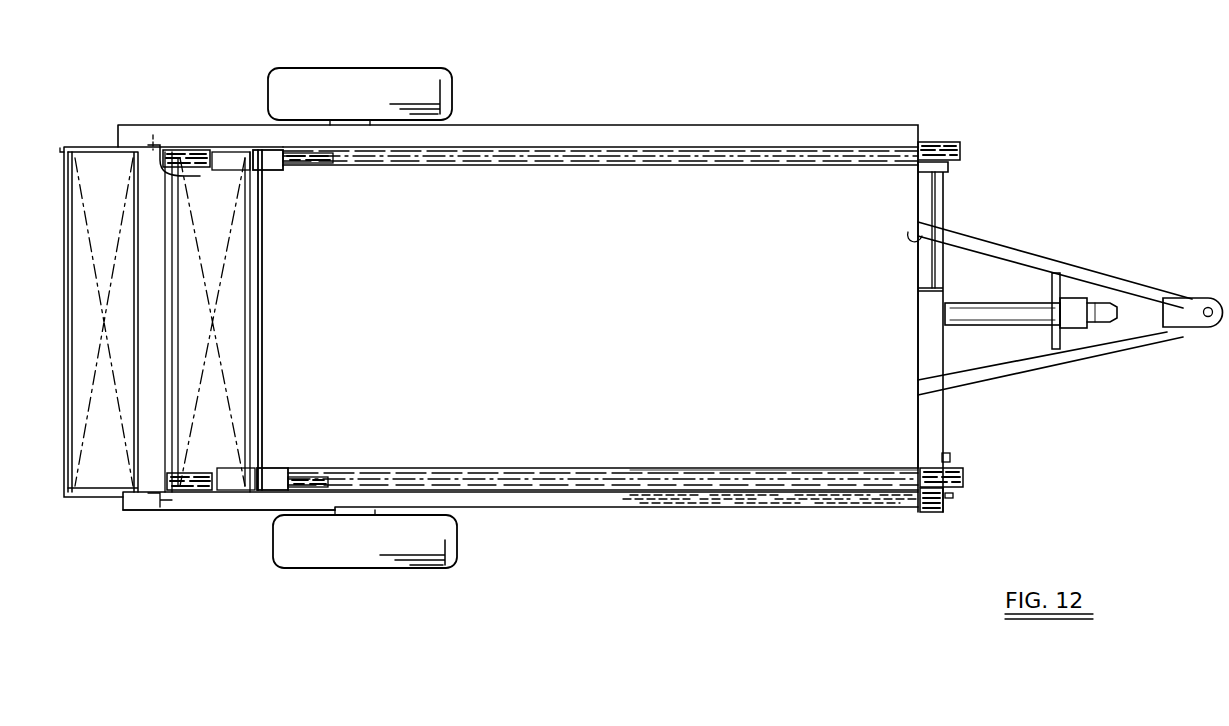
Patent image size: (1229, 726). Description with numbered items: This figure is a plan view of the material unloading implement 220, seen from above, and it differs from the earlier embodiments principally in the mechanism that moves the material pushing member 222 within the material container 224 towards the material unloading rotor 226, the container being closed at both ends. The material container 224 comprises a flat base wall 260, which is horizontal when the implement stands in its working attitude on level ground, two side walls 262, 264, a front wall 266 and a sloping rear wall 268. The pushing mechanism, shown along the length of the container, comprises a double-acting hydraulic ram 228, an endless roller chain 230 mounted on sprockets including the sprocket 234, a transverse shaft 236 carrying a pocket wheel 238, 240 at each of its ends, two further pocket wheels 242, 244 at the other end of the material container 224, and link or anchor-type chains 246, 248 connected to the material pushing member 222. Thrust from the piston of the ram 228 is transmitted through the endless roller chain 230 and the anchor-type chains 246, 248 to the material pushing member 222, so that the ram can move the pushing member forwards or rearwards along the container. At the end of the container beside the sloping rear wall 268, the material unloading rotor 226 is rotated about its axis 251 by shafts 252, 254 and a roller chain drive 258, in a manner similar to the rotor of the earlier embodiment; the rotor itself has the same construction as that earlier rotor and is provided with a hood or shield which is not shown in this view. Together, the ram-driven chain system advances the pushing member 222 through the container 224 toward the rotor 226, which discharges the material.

The material unloading implement 220 is at (816, 111).
The material pushing member 222 is at (262, 240).
The material container 224 is at (757, 462).
The material unloading rotor 226 is at (97, 475).
The double-acting hydraulic ram 228 is at (585, 503).
The endless roller chain 230 is at (852, 497).
The sprocket 234 is at (948, 500).
The transverse shaft 236 is at (945, 262).
The pocket wheel 238 is at (965, 472).
The pocket wheel 240 is at (958, 136).
The pocket wheel 242 is at (175, 490).
The pocket wheel 244 is at (178, 155).
The anchor-type chain 246 is at (318, 490).
The anchor-type chain 248 is at (305, 153).
The rotor axis 251 is at (155, 135).
The shaft 252 is at (1110, 305).
The shaft 254 is at (1035, 322).
The roller chain drive 258 is at (932, 422).
The flat base wall 260 is at (672, 405).
The side wall 262 is at (527, 472).
The side wall 264 is at (524, 150).
The front wall 266 is at (915, 232).
The sloping rear wall 268 is at (62, 148).